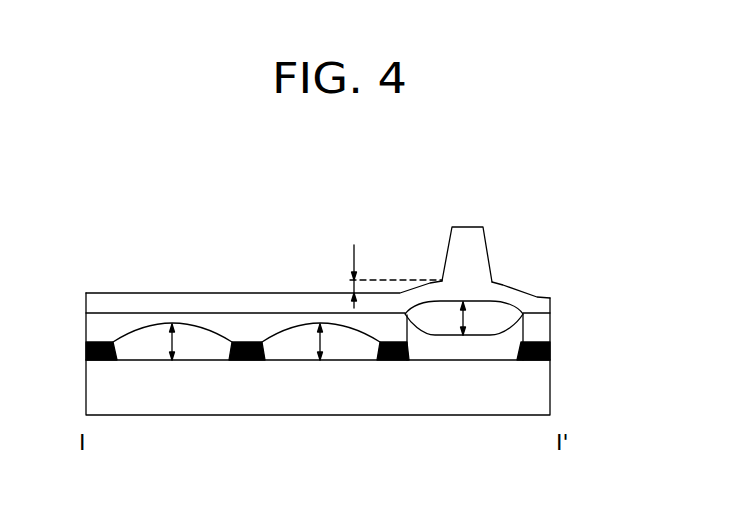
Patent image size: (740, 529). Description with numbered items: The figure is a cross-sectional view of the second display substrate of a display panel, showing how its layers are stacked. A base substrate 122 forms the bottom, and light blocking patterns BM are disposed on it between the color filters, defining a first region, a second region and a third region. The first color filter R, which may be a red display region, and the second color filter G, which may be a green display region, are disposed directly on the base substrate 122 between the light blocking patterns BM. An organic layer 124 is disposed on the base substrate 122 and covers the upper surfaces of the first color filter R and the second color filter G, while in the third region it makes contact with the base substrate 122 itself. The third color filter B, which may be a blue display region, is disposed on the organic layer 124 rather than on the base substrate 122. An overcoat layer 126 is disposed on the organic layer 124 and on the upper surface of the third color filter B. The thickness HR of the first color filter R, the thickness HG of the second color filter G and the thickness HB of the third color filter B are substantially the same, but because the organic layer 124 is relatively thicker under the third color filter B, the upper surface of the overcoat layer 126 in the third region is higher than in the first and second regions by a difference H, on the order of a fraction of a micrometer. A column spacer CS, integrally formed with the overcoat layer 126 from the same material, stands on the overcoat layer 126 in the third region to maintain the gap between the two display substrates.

The base substrate 122 is at (545, 390).
The light blocking pattern BM is at (548, 348).
The organic layer 124 is at (545, 328).
The overcoat layer 126 is at (545, 303).
The column spacer CS is at (480, 250).
The height difference H is at (388, 276).
The first color filter R is at (172, 340).
The second color filter G is at (321, 340).
The third color filter B is at (464, 330).
The thickness of the first color filter HR is at (173, 343).
The thickness of the second color filter HG is at (320, 343).
The thickness of the third color filter HB is at (465, 332).